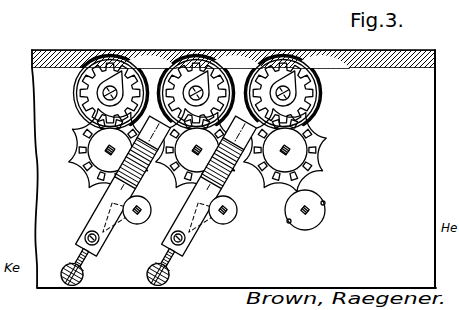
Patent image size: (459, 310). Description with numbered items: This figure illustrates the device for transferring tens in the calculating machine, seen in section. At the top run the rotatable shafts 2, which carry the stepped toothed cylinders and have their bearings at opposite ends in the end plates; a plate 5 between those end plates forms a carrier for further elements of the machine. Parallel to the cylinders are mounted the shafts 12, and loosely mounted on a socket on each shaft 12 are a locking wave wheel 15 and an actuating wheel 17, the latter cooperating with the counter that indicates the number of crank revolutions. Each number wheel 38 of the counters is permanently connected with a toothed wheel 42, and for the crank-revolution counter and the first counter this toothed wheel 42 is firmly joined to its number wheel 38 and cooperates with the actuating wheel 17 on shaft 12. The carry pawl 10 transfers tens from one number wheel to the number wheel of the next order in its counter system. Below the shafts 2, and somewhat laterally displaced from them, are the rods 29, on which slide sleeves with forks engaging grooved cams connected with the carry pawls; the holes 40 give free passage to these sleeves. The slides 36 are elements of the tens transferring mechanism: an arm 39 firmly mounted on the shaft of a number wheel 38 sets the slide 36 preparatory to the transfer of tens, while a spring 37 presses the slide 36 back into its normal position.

The rotatable shaft 2 is at (312, 213).
The plate 5 is at (424, 121).
The carry pawl 10 is at (166, 201).
The shaft 12 is at (105, 152).
The locking wave wheel 15 is at (80, 132).
The actuating wheel 17 is at (72, 152).
The rod 29 is at (86, 237).
The slide 36 is at (107, 212).
The spring 37 is at (66, 266).
The number wheel 38 is at (320, 88).
The arm 39 is at (116, 75).
The hole 40 is at (110, 230).
The toothed wheel 42 is at (96, 86).